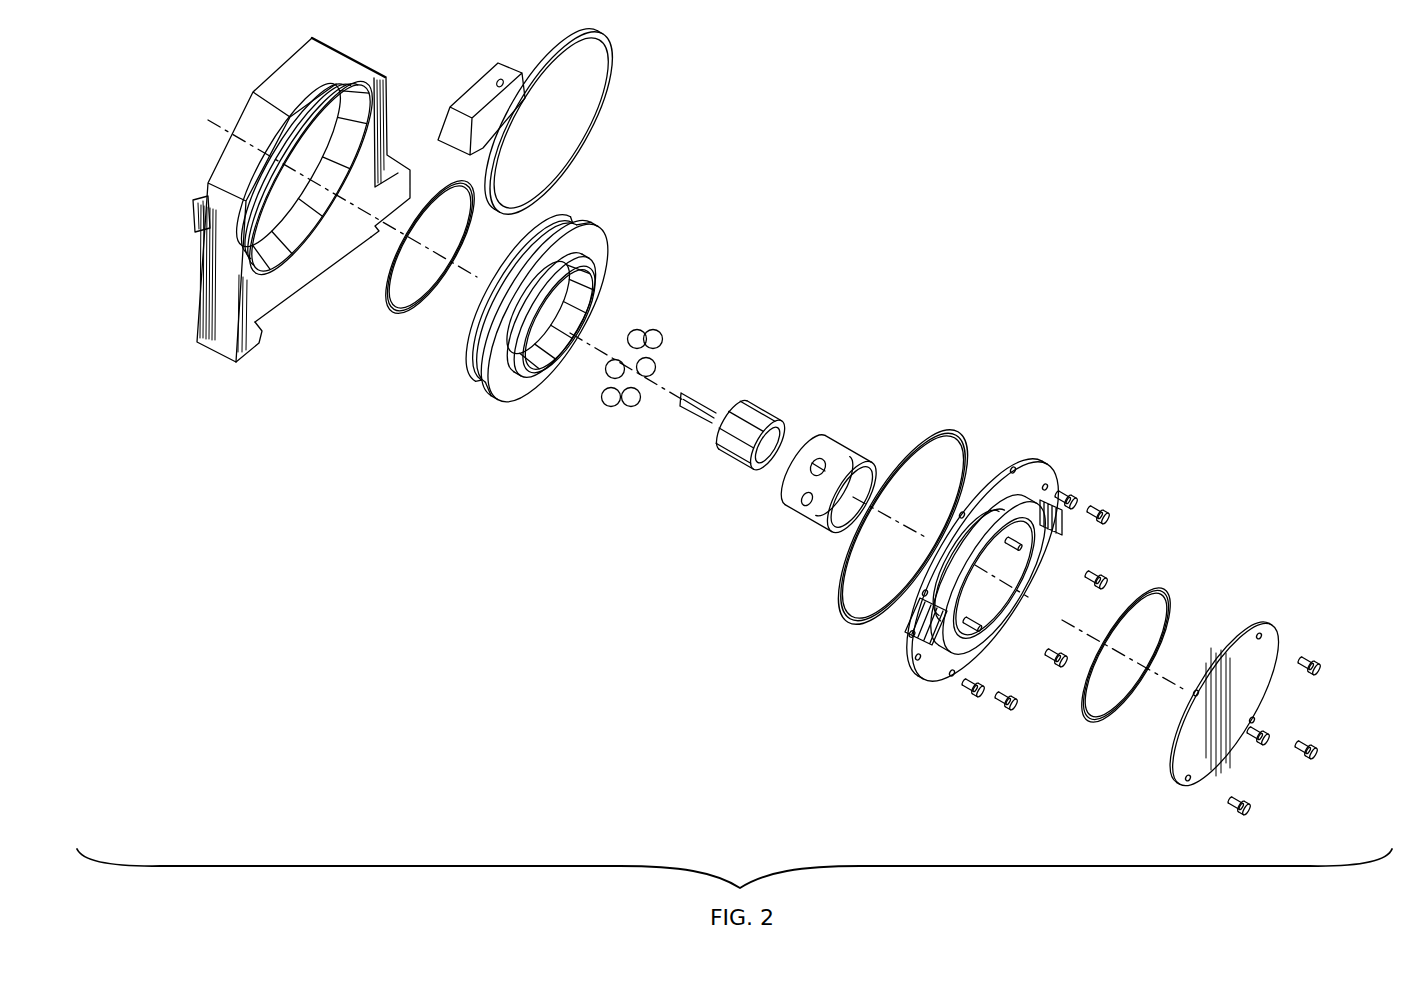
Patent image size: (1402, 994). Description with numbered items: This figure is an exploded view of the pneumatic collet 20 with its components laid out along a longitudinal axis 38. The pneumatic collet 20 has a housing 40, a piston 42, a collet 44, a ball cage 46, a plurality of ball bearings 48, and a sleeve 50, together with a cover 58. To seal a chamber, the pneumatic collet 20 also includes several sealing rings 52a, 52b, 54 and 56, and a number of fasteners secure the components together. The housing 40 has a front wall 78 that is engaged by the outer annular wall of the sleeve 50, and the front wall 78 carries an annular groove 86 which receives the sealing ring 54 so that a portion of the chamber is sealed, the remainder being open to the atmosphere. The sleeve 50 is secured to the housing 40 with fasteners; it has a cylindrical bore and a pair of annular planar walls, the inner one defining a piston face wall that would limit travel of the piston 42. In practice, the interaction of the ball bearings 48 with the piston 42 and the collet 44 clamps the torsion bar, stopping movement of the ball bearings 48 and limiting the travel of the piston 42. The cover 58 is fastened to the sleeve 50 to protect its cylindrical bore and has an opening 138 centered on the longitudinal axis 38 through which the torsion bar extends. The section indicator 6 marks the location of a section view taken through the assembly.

The pneumatic collet 20 is at (1045, 277).
The longitudinal axis 38 is at (208, 120).
The housing 40 is at (362, 72).
The annular groove 86 is at (382, 97).
The front wall 78 is at (274, 288).
The sealing ring 52a is at (388, 310).
The sealing ring 56 is at (580, 166).
The piston 42 is at (581, 257).
The ball bearings 48 is at (658, 362).
The collet 44 is at (758, 394).
The ball cage 46 is at (826, 438).
The sealing ring 54 is at (851, 613).
The sleeve 50 is at (1036, 480).
The sealing ring 52b is at (1090, 713).
The cover 58 is at (1254, 627).
The opening 138 is at (1251, 812).
The section line 6- 6 is at (951, 366).